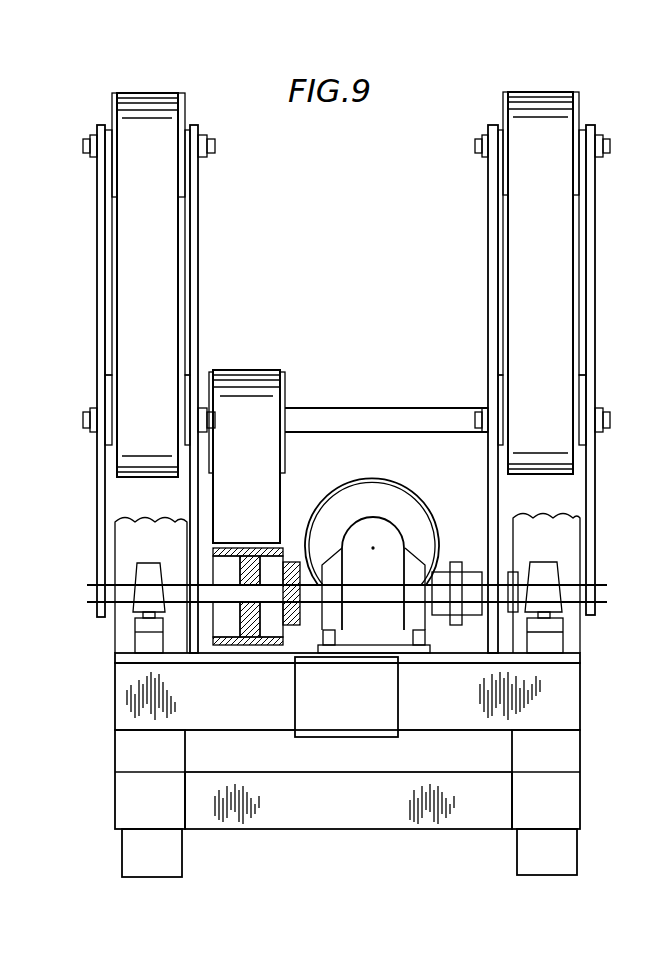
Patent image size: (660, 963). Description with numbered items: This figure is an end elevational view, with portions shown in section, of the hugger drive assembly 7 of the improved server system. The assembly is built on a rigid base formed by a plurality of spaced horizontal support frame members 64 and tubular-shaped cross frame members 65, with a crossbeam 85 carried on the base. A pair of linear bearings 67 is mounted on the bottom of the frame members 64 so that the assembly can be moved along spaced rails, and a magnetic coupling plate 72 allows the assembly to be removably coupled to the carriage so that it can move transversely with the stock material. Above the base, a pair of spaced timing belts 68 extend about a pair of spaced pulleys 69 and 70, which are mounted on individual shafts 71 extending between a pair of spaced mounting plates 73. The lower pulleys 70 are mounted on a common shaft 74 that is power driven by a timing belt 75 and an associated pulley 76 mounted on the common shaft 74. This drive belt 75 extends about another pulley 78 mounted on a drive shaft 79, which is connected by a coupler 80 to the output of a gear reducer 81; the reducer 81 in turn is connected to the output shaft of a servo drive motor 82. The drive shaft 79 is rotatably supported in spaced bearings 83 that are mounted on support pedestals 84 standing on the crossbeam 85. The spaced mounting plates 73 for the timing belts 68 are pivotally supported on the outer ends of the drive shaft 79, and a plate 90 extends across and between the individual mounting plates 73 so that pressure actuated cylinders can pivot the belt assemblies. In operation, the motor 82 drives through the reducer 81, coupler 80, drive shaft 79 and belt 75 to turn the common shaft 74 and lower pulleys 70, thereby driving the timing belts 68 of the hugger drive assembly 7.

The hugger drive assembly 7 is at (243, 257).
The horizontal support frame member 64 is at (148, 812).
The cross frame member 65 is at (361, 803).
The linear bearing 67 is at (545, 866).
The timing belt 68 is at (150, 304).
The pulley 69 is at (113, 112).
The pulley 70 is at (110, 391).
The shaft 71 is at (212, 154).
The magnetic coupling plate 72 is at (355, 698).
The mounting plate 73 is at (99, 264).
The common shaft 74 is at (87, 428).
The timing belt 75 is at (250, 395).
The pulley 76 is at (285, 393).
The pulley 78 is at (241, 644).
The drive shaft 79 is at (218, 600).
The coupler 80 is at (292, 548).
The gear reducer 81 is at (382, 600).
The servo drive motor 82 is at (358, 481).
The bearing 83 is at (148, 582).
The support pedestal 84 is at (150, 644).
The crossbeam 85 is at (548, 693).
The plate 90 is at (190, 280).